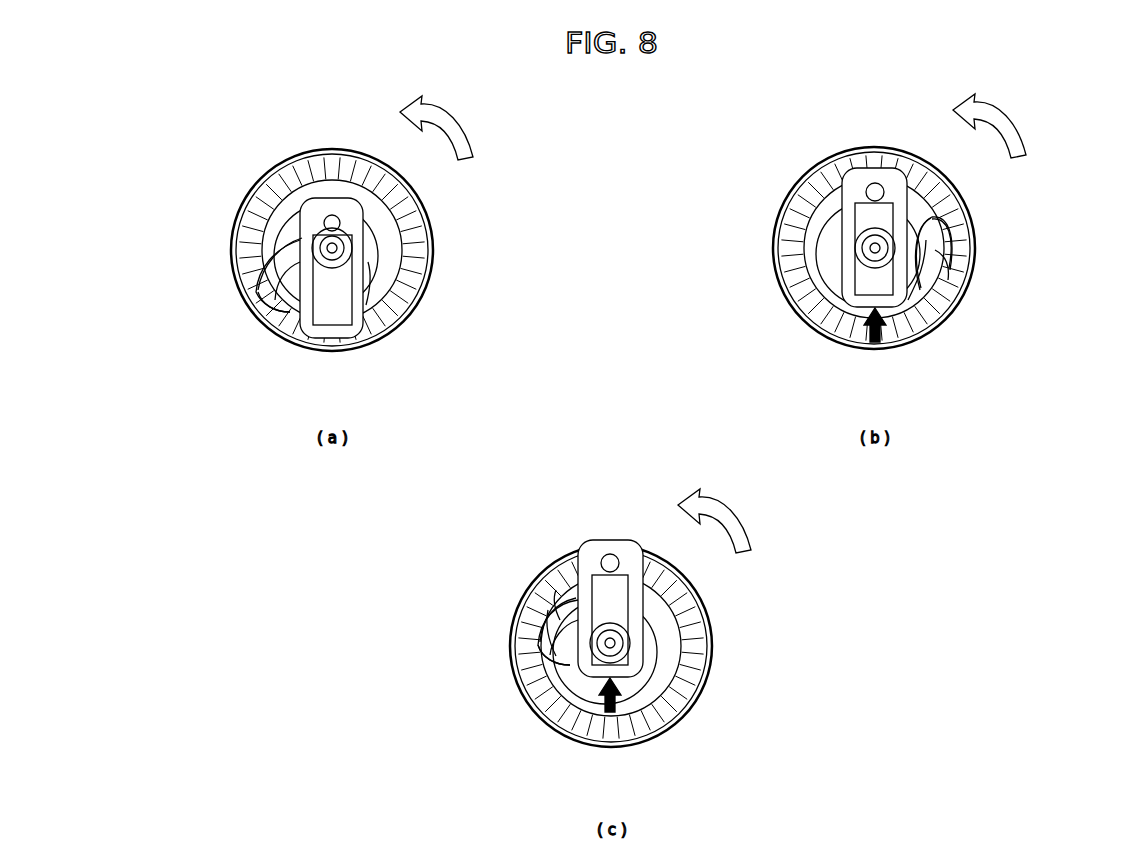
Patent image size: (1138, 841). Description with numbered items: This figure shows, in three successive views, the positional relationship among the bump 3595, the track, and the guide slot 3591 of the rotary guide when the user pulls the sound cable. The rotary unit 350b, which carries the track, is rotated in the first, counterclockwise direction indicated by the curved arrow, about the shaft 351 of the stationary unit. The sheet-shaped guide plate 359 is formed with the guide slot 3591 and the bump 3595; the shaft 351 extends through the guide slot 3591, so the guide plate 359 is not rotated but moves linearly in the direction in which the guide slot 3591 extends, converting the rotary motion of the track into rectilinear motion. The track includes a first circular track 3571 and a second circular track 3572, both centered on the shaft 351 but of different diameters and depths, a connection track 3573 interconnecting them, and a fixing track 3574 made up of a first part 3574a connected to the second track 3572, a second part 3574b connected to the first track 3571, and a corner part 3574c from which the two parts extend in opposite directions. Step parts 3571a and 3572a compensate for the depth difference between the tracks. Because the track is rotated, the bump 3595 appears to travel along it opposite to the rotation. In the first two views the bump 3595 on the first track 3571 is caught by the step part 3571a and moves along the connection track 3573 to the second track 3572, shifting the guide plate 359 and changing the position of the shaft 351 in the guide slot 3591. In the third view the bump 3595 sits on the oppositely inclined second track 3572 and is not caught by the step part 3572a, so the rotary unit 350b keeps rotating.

The rotary unit 350b is at (235, 186).
The shaft 351 is at (333, 256).
The guide plate 359 is at (505, 203).
The guide slot 3591 is at (345, 247).
The bump 3595 is at (342, 224).
The first circular track 3571 is at (848, 298).
The step part 3571a is at (912, 298).
The second circular track 3572 is at (420, 263).
The step part 3572a is at (240, 265).
The connection track 3573 is at (366, 305).
The fixing track 3574 is at (145, 265).
The first part 3574a is at (268, 278).
The second part 3574b is at (270, 282).
The corner part 3574c is at (263, 303).